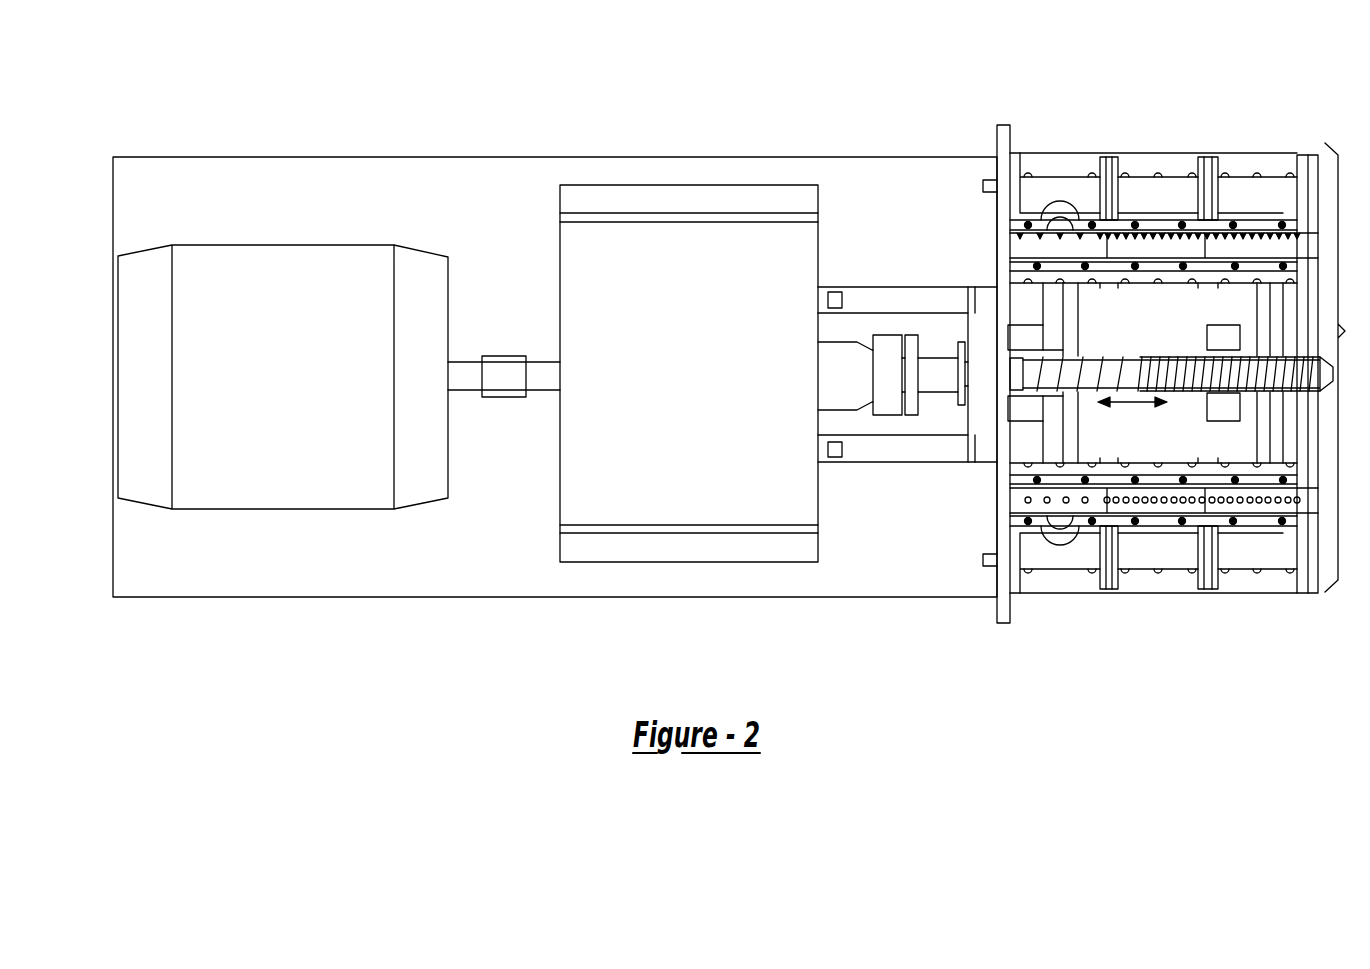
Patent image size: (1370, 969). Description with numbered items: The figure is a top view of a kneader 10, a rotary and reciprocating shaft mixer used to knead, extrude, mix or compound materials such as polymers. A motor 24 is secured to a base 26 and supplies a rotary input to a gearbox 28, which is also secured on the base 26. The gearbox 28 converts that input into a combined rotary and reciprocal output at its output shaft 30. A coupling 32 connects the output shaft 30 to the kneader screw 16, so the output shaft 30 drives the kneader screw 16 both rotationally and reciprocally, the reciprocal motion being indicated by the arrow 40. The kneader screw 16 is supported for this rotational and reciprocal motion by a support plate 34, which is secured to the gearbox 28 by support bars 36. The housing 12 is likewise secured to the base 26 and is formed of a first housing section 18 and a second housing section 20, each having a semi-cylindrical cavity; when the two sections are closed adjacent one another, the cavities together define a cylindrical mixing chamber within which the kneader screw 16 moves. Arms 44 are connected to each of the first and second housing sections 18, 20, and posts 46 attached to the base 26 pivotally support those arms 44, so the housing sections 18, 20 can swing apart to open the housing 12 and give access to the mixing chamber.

The kneader 10 is at (578, 118).
The housing 12 is at (1189, 368).
The kneader screw 16 is at (1065, 372).
The first housing section 18 is at (1072, 577).
The second housing section 20 is at (1127, 45).
The motor 24 is at (298, 292).
The base 26 is at (433, 568).
The gearbox 28 is at (700, 200).
The output shaft 30 is at (845, 395).
The coupling 32 is at (887, 342).
The support plate 34 is at (985, 450).
The support bars 36 is at (870, 297).
The arrow 40 is at (1126, 402).
The arms 44 is at (1068, 308).
The posts 46 is at (1030, 336).